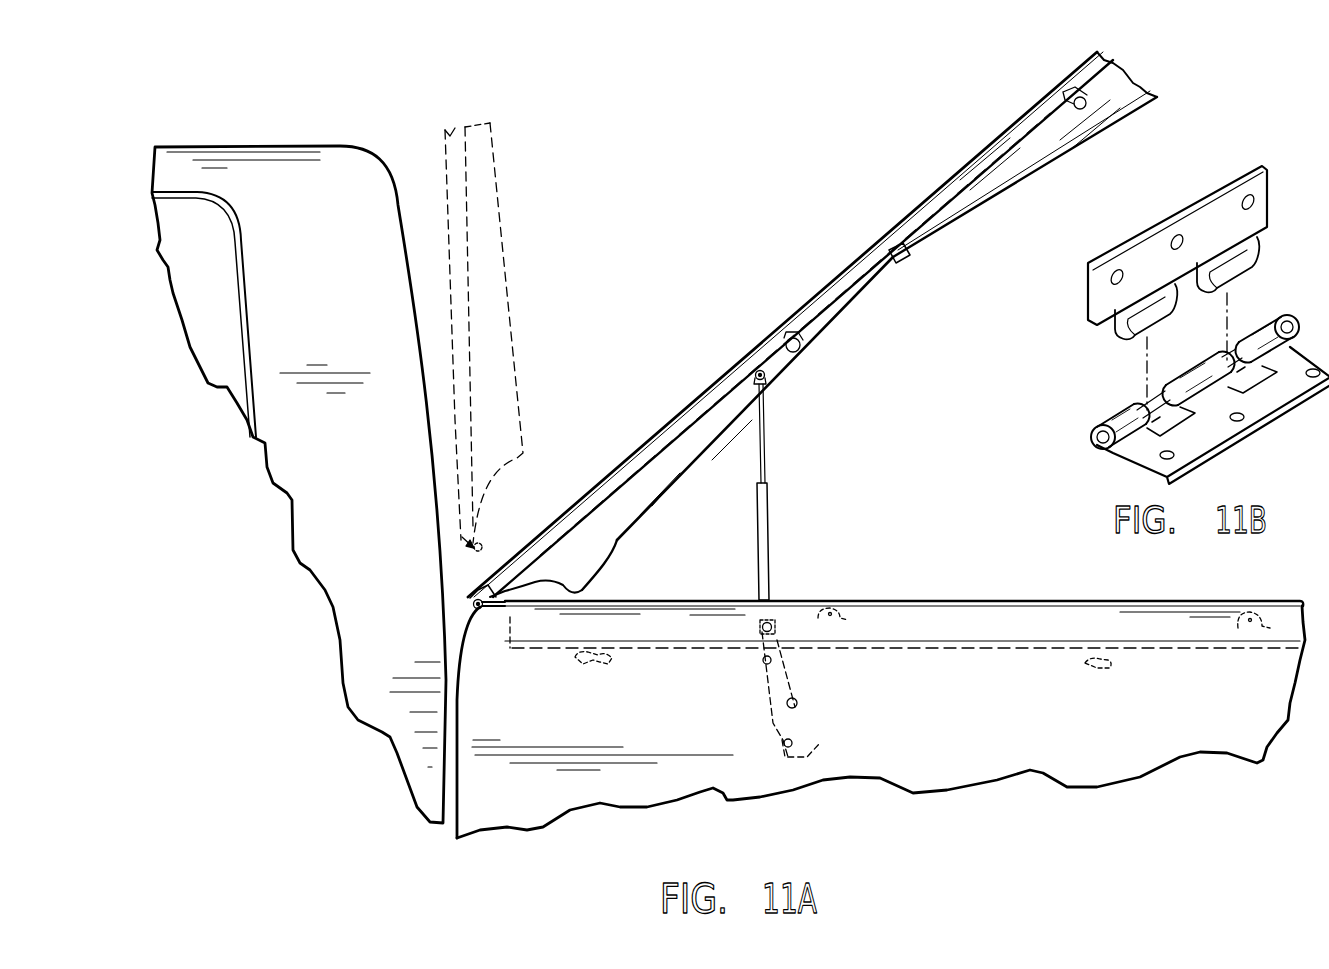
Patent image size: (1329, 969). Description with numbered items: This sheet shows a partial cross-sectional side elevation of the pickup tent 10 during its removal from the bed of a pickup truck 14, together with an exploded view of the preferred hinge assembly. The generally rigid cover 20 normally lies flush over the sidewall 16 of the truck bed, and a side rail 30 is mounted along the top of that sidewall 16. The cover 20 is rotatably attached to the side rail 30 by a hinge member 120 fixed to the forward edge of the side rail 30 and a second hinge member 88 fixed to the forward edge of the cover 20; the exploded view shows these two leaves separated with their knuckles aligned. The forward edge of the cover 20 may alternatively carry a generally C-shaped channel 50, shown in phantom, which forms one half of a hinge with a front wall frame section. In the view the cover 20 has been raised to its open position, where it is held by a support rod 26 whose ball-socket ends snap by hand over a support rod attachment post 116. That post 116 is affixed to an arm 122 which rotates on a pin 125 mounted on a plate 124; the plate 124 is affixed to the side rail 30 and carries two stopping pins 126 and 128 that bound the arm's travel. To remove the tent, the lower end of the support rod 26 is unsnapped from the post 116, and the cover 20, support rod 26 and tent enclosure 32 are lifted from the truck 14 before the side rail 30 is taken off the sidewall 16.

In FIG. 11A, the pickup tent 10 is at (962, 133).
In FIG. 11A, the pickup truck 14 is at (380, 223).
In FIG. 11A, the sidewall 16 is at (1037, 693).
In FIG. 11A, the cover 20 is at (485, 243).
In FIG. 11A, the support rod 26 is at (768, 535).
In FIG. 11A, the side rail 30 is at (945, 617).
In FIG. 11A, the tent enclosure 32 is at (970, 210).
In FIG. 11A, the C-shaped channel 50 is at (473, 560).
In FIG. 11A, the second hinge member 88 is at (487, 575).
In FIG. 11B, the second hinge member 88 is at (1113, 295).
In FIG. 11A, the support rod attachment post 116 is at (760, 626).
In FIG. 11A, the hinge member 120 is at (492, 618).
In FIG. 11B, the hinge member 120 is at (1265, 398).
In FIG. 11A, the arm 122 is at (760, 682).
In FIG. 11A, the plate 124 is at (858, 647).
In FIG. 11A, the pin 125 is at (772, 690).
In FIG. 11A, the stopping pin 126 is at (753, 660).
In FIG. 11A, the stopping pin 128 is at (797, 760).